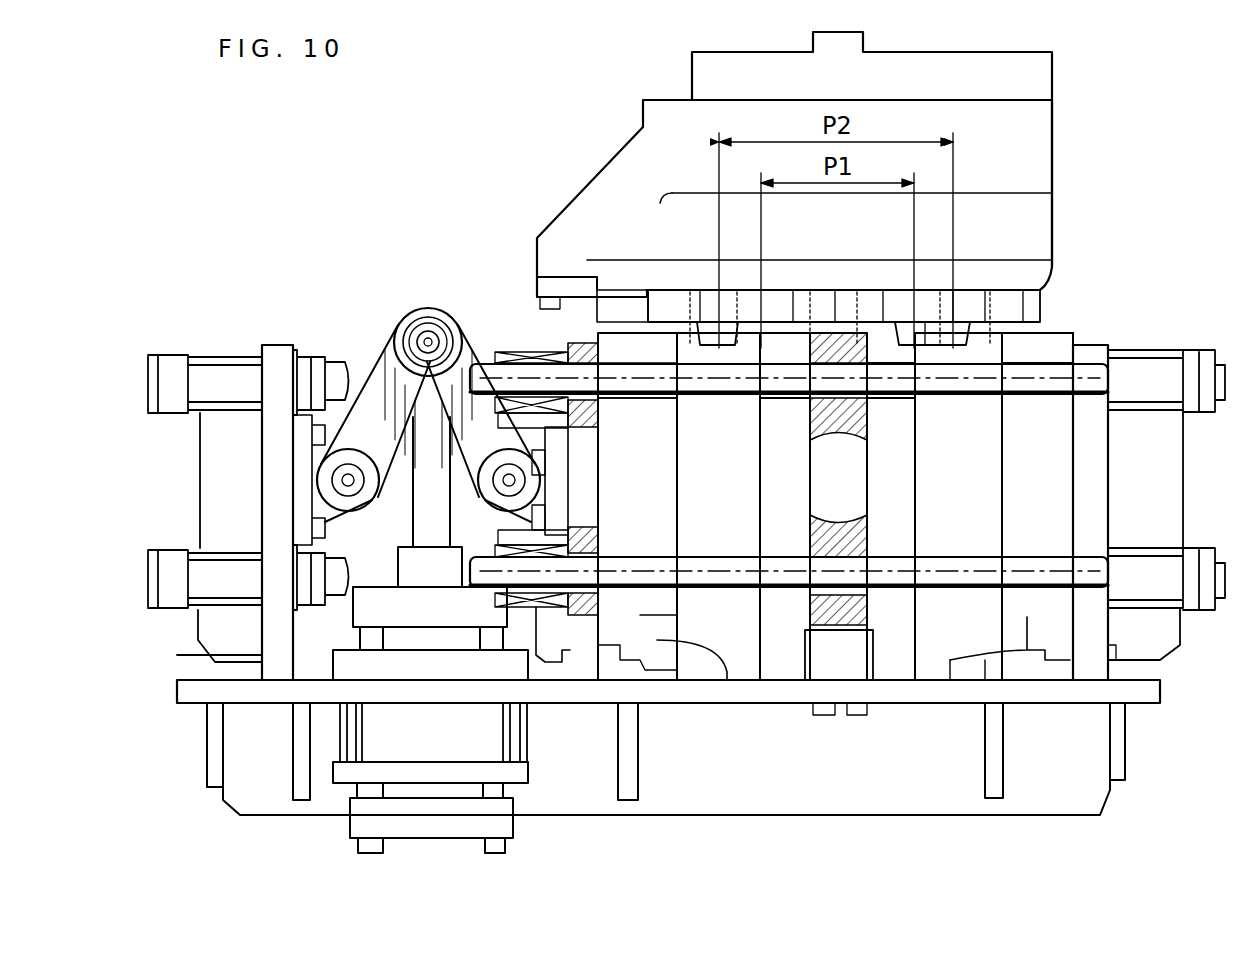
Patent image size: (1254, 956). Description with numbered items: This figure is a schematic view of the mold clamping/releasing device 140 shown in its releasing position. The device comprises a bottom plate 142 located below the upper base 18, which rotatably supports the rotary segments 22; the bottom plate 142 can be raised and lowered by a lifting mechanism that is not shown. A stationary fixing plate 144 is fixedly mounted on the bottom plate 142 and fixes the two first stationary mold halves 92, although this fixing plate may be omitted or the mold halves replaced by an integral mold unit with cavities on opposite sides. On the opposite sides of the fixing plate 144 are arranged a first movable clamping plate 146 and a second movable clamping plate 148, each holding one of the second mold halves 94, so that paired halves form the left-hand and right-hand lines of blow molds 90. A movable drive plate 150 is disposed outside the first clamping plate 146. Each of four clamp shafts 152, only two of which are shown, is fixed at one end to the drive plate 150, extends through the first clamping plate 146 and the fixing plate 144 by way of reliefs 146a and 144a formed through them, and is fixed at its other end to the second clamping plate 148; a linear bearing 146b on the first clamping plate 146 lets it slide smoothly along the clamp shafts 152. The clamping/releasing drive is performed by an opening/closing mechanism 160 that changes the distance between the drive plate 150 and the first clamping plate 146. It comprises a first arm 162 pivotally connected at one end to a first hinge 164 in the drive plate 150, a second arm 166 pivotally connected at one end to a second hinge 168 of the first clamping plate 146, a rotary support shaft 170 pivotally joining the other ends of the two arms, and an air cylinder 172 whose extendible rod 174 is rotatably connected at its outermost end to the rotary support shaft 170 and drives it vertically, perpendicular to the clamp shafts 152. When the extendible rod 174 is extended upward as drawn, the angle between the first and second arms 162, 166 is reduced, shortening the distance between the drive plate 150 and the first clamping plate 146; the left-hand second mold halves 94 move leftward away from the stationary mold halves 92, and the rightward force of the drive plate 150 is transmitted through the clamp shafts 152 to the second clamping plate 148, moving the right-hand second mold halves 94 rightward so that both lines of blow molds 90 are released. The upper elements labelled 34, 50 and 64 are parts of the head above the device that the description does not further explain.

The upper base 18 is at (613, 185).
The rotary segments 22 is at (1035, 272).
The mounting plate 34 is at (540, 300).
The lower head portion 50 is at (1025, 312).
The pad 64 is at (712, 342).
The blow molds 90 is at (797, 743).
The first stationary mold halves 92 is at (837, 477).
The second mold halves 94 is at (839, 477).
The clamping/releasing device 140 is at (1148, 337).
The bottom plate 142 is at (1140, 690).
The stationary fixing plate 144 is at (893, 552).
The reliefs 144a is at (867, 433).
The first movable clamping plate 146 is at (639, 540).
The reliefs 146a is at (598, 413).
The linear bearing 146b is at (568, 412).
The second movable clamping plate 148 is at (1100, 628).
The movable drive plate 150 is at (272, 622).
The clamp shafts 152 is at (1048, 380).
The opening/closing mechanism 160 is at (427, 389).
The first arm 162 is at (385, 370).
The first hinge 164 is at (325, 482).
The second arm 166 is at (531, 487).
The second hinge 168 is at (525, 482).
The rotary support shaft 170 is at (428, 325).
The air cylinder 172 is at (440, 750).
The extendible rod 174 is at (422, 505).